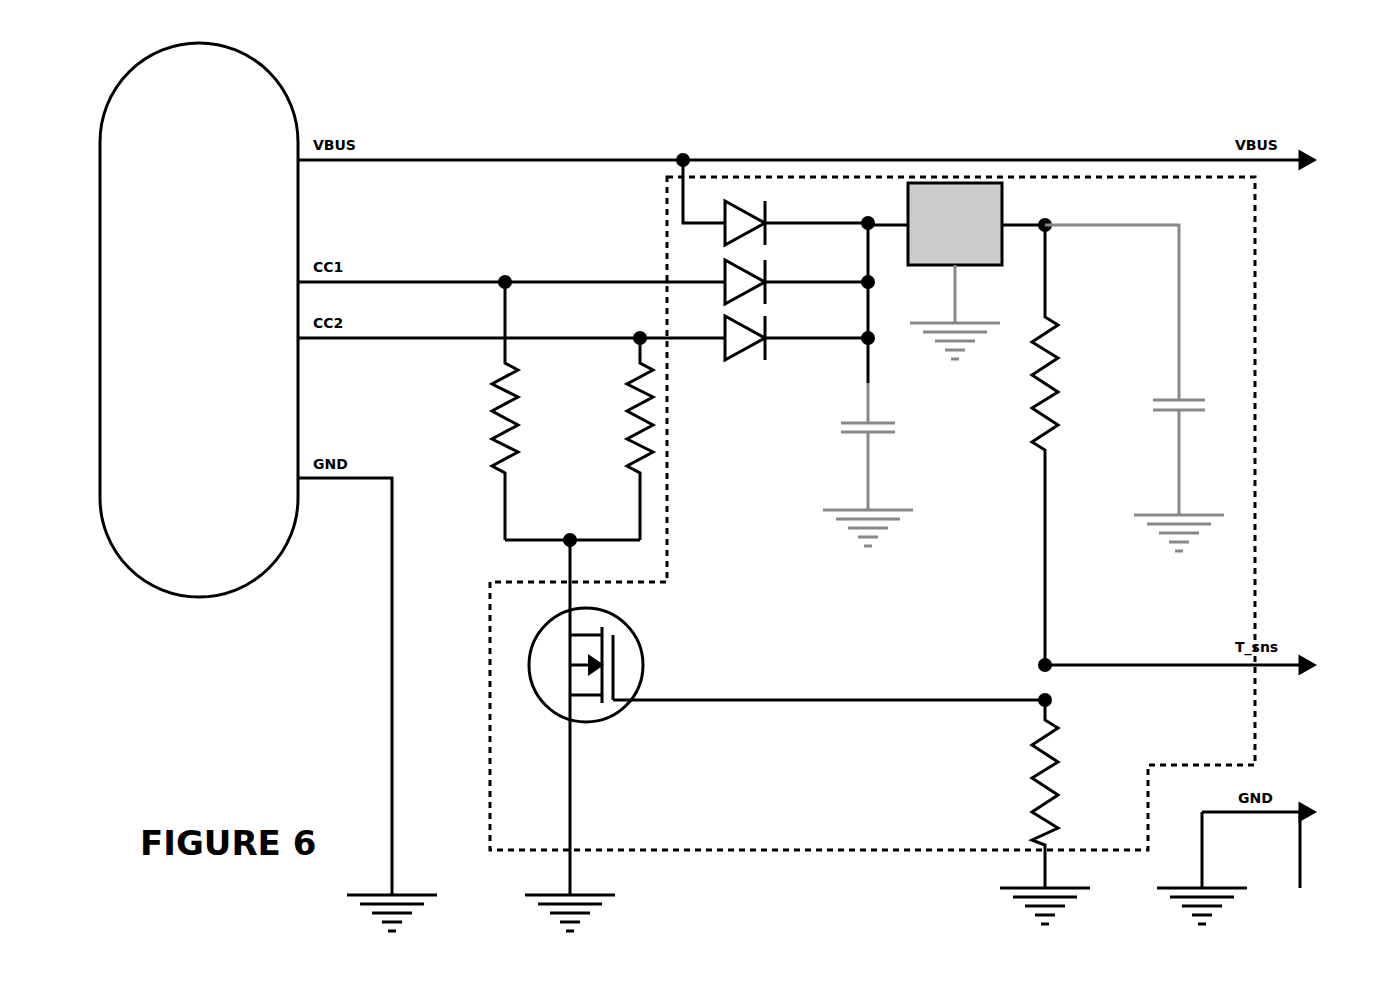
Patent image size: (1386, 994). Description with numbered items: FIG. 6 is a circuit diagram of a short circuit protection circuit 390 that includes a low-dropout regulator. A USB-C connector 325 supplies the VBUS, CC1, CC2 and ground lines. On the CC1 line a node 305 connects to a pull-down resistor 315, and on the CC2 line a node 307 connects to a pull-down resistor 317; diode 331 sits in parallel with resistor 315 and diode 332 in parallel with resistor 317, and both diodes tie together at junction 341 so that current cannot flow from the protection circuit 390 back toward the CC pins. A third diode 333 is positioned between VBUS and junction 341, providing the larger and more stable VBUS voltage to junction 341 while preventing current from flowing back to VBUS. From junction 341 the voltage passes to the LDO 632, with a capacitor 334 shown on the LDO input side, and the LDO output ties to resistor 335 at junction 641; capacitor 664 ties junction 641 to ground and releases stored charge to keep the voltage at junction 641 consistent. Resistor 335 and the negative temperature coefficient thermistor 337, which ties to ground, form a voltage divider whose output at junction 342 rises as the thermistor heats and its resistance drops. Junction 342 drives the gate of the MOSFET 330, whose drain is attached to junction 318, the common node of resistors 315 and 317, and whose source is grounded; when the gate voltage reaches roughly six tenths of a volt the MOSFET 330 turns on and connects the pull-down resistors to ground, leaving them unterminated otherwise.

The USB-C connector 325 is at (278, 80).
The CC1 node 305 is at (508, 282).
The CC2 node 307 is at (640, 337).
The resistor 315 is at (498, 388).
The resistor 317 is at (633, 410).
The junction 318 is at (568, 543).
The MOSFET 330 is at (645, 655).
The diode 331 is at (722, 270).
The diode 332 is at (762, 352).
The third diode 333 is at (722, 214).
The capacitor 334 is at (875, 427).
The resistor 335 is at (1050, 372).
The negative temperature coefficient thermistor 337 is at (1050, 732).
The junction 341 is at (870, 338).
The junction 342 is at (1042, 698).
The short circuit protection circuit 390 is at (1256, 228).
The LDO regulator 632 is at (1003, 210).
The junction 641 is at (1046, 231).
The capacitor 664 is at (1185, 408).